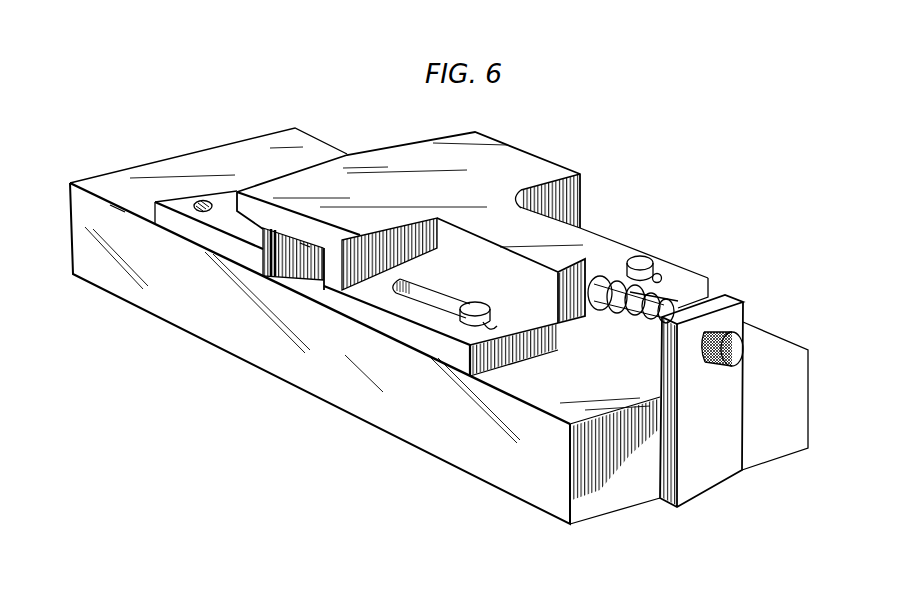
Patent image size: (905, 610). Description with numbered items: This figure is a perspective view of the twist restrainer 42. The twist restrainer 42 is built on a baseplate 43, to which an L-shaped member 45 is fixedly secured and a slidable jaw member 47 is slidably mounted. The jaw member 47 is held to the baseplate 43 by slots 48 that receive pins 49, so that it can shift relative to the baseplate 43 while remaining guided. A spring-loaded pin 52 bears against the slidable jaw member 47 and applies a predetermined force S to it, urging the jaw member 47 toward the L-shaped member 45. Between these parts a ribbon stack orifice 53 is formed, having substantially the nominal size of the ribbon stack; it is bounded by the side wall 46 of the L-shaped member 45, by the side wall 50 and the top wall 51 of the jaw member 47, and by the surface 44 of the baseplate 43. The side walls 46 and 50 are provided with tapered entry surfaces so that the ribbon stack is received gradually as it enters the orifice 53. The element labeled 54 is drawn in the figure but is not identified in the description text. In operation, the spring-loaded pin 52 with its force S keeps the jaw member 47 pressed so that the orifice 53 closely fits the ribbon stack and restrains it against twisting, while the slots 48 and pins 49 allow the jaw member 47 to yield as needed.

The twist restrainer 42 is at (651, 539).
The baseplate 43 is at (397, 423).
The surface of baseplate 44 is at (310, 283).
The L-shaped member 45 is at (203, 228).
The side wall of L-shaped member 46 is at (295, 258).
The slidable jaw member 47 is at (513, 350).
The slots 48 is at (433, 297).
The pins 49 is at (478, 304).
The side wall of jaw member 50 is at (320, 290).
The top wall of jaw member 51 is at (298, 252).
The spring-loaded pin 52 is at (708, 284).
The ribbon stack orifice 53 is at (277, 253).
The end plate with knob 54 is at (720, 475).
The predetermined force S is at (627, 330).